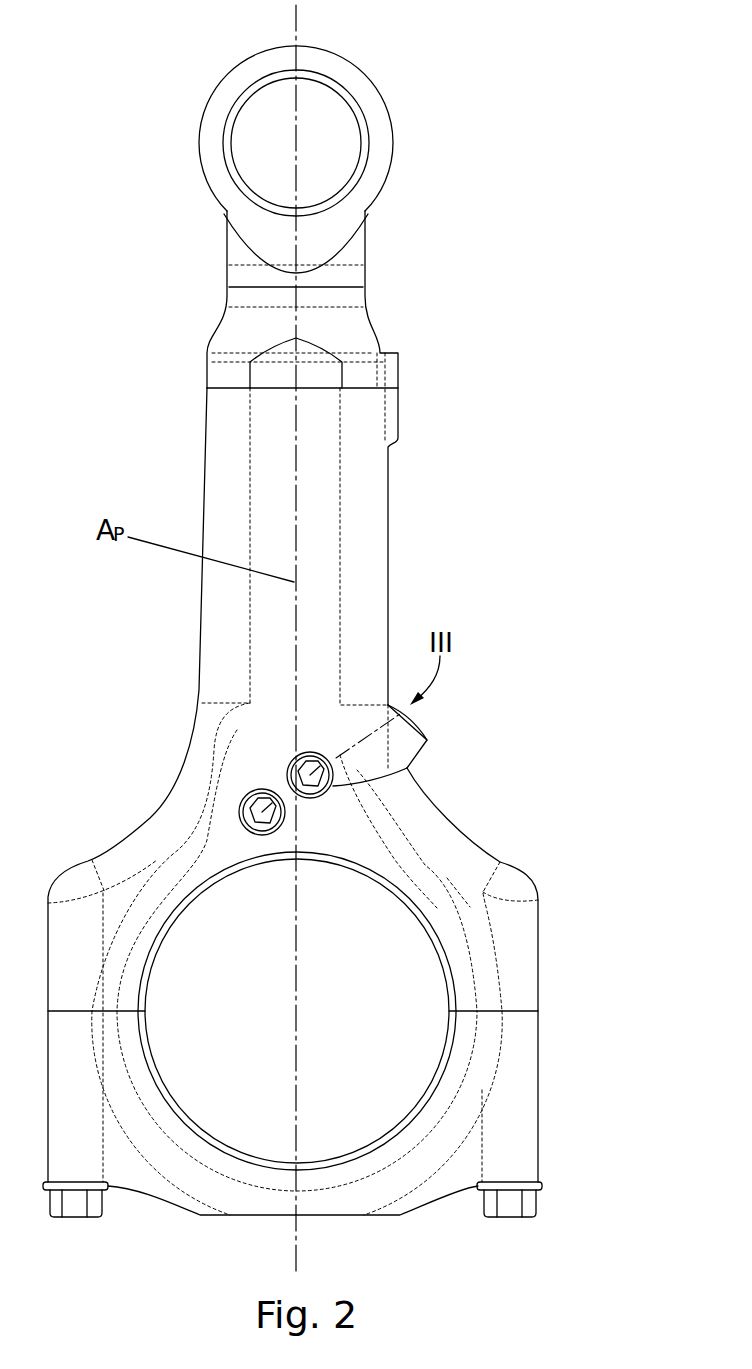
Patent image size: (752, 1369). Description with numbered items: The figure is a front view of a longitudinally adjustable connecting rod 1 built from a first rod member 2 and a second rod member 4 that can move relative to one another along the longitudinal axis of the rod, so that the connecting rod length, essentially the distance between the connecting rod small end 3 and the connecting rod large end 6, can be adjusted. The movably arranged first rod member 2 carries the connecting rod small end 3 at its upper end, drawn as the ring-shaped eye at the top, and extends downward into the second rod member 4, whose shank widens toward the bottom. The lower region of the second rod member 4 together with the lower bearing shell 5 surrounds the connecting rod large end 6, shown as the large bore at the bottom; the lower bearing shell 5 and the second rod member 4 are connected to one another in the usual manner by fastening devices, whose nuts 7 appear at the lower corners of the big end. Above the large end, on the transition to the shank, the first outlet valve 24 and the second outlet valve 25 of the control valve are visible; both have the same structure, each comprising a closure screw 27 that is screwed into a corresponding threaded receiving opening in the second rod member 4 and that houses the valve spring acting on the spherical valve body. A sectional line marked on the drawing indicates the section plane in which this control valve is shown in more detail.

The connecting rod 1 is at (578, 604).
The first rod member 2 is at (357, 333).
The connecting rod small end 3 is at (383, 130).
The second rod member 4 is at (377, 510).
The lower bearing shell 5 is at (477, 1063).
The connecting rod large end 6 is at (386, 1186).
The nut 7 is at (523, 1208).
The first outlet valve 24 is at (230, 787).
The second outlet valve 25 is at (278, 757).
The closure screw 27 is at (240, 806).